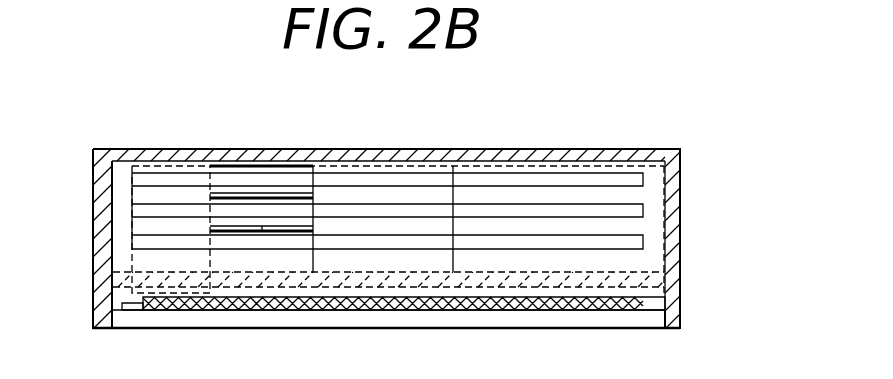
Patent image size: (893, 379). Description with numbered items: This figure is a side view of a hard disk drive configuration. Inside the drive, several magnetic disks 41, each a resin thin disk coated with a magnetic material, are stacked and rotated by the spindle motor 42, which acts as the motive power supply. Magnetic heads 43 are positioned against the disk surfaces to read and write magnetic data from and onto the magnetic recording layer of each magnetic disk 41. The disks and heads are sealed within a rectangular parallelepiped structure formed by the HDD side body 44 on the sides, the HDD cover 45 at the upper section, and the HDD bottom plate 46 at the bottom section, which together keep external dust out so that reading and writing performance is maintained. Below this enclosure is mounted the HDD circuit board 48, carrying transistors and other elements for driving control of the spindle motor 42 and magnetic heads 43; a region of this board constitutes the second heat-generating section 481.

The magnetic disk 41 is at (627, 178).
The spindle motor 42 is at (395, 257).
The magnetic head 43 is at (280, 196).
The HDD side body 44 is at (92, 222).
The HDD cover 45 is at (525, 149).
The HDD bottom plate 46 is at (613, 278).
The HDD circuit board 48 is at (392, 312).
The second heat-generating section 481 is at (358, 312).